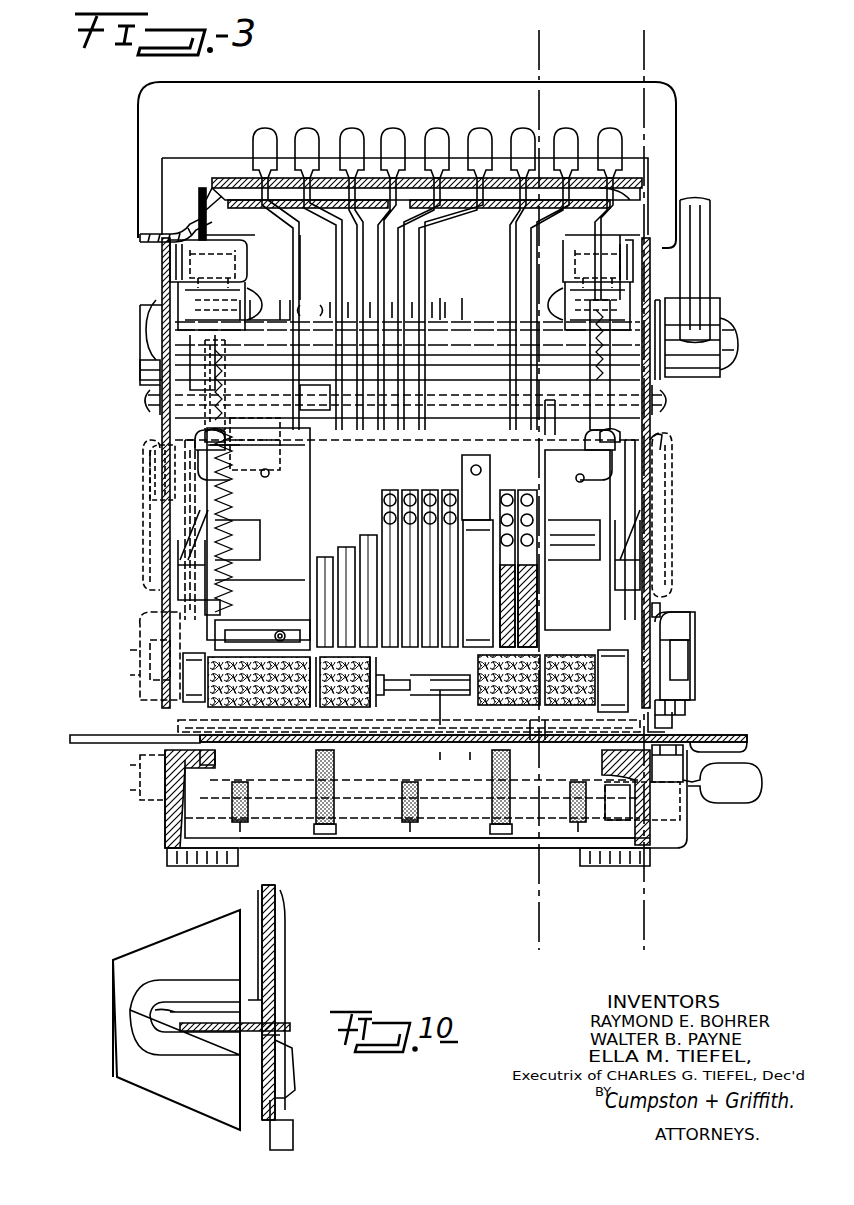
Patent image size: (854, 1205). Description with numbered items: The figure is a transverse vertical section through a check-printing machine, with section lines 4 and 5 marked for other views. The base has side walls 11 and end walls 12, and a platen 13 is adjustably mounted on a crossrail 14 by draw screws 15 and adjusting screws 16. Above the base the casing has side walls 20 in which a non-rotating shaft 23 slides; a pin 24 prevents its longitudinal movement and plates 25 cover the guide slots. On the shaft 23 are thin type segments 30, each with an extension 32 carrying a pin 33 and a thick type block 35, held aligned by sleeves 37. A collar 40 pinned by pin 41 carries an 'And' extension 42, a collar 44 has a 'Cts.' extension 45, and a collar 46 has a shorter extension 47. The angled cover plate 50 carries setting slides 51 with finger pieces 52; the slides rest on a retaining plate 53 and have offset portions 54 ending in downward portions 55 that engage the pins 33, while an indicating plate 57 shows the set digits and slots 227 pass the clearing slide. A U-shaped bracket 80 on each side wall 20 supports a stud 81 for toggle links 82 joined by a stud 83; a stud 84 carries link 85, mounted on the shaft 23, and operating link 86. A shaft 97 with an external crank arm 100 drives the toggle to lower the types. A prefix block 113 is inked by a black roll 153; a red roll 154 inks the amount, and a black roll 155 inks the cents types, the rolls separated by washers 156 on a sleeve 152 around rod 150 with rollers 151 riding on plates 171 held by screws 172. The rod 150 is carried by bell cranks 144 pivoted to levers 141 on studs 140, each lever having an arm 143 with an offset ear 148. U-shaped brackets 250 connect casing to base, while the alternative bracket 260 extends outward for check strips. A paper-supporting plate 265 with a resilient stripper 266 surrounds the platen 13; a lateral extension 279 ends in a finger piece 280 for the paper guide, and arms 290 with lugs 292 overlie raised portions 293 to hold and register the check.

In FIG. 3, the section line 4- 4 is at (649, 932).
In FIG. 3, the section line 5- 5 is at (534, 942).
In FIG. 3, the side walls of base 11 is at (640, 828).
In FIG. 10, the side walls of base 11 is at (290, 1120).
In FIG. 3, the end walls of base 12 is at (368, 840).
In FIG. 3, the platen 13 is at (608, 735).
In FIG. 3, the crossrail 14 is at (412, 807).
In FIG. 3, the draw screws 15 is at (498, 836).
In FIG. 3, the adjusting screws 16 is at (578, 792).
In FIG. 3, the side walls of casing 20 is at (655, 592).
In FIG. 3, the shaft 23 is at (275, 450).
In FIG. 3, the pin 24 is at (150, 462).
In FIG. 3, the plates 25 is at (662, 505).
In FIG. 3, the type segments 30 is at (435, 420).
In FIG. 3, the extension 32 is at (330, 338).
In FIG. 3, the pin 33 is at (320, 300).
In FIG. 3, the type block 35 is at (472, 560).
In FIG. 3, the sleeve 37 is at (338, 435).
In FIG. 3, the collar 40 is at (495, 415).
In FIG. 3, the pin 41 is at (472, 478).
In FIG. 3, the radial extension 42 is at (478, 583).
In FIG. 3, the collar 44 is at (548, 432).
In FIG. 3, the extension 45 is at (577, 540).
In FIG. 3, the collar 46 is at (240, 521).
In FIG. 3, the radial extension 47 is at (258, 534).
In FIG. 3, the cover plate 50 is at (148, 212).
In FIG. 3, the setting slides 51 is at (258, 172).
In FIG. 3, the finger pieces 52 is at (365, 130).
In FIG. 3, the retaining plate 53 is at (448, 200).
In FIG. 3, the offset portions 54 is at (320, 236).
In FIG. 3, the downwardly extending portions 55 is at (508, 262).
In FIG. 3, the indicating plate 57 is at (590, 165).
In FIG. 3, the U-shaped bracket 80 is at (563, 266).
In FIG. 3, the stud 81 is at (655, 300).
In FIG. 3, the links 82 is at (228, 272).
In FIG. 3, the stud 83 is at (690, 357).
In FIG. 3, the stud 84 is at (590, 380).
In FIG. 3, the link 85 is at (590, 445).
In FIG. 3, the link 86 is at (590, 440).
In FIG. 3, the shaft 97 is at (407, 359).
In FIG. 3, the crank arm 100 is at (705, 240).
In FIG. 3, the prefix block 113 is at (232, 630).
In FIG. 3, the stud 140 is at (662, 400).
In FIG. 3, the lever 141 is at (645, 548).
In FIG. 3, the arm 143 is at (665, 445).
In FIG. 3, the bell crank 144 is at (690, 618).
In FIG. 3, the offset ear 148 is at (605, 472).
In FIG. 3, the rod 150 is at (440, 700).
In FIG. 3, the rollers 151 is at (405, 681).
In FIG. 3, the sleeve 152 is at (388, 675).
In FIG. 3, the black inking roll 153 is at (250, 710).
In FIG. 3, the red inking roll 154 is at (485, 695).
In FIG. 3, the black inking roll 155 is at (565, 710).
In FIG. 3, the washers 156 is at (314, 710).
In FIG. 3, the plates 171 is at (660, 608).
In FIG. 3, the screws 172 is at (640, 568).
In FIG. 3, the slots 227 is at (200, 180).
In FIG. 3, the U-shaped brackets 250 is at (695, 638).
In FIG. 10, the bracket 260 is at (200, 1095).
In FIG. 3, the paper-supporting plate 265 is at (455, 750).
In FIG. 3, the resilient portion 266 is at (540, 740).
In FIG. 3, the lateral extension 279 is at (617, 802).
In FIG. 3, the finger piece 280 is at (745, 805).
In FIG. 3, the arms 290 is at (686, 696).
In FIG. 3, the lateral lug 292 is at (672, 726).
In FIG. 3, the raised portion 293 is at (667, 763).